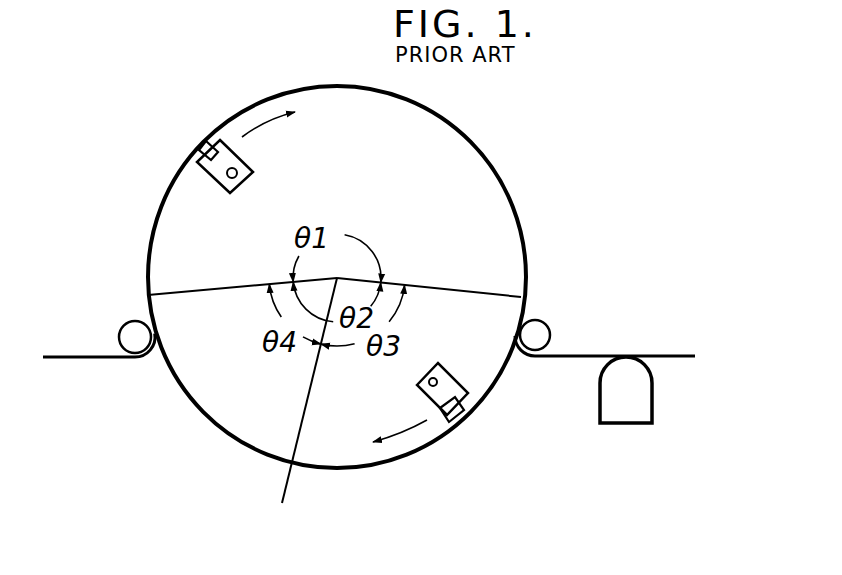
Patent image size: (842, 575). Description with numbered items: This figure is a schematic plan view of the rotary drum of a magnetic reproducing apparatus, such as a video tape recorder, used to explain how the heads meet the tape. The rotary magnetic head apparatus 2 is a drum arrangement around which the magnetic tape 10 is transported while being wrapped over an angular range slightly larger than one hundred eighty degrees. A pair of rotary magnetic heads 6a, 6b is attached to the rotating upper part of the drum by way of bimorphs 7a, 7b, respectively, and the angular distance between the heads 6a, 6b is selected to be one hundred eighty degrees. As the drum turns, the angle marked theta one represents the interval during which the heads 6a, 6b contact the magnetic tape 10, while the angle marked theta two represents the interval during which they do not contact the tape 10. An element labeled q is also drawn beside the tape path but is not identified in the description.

The rotary magnetic head apparatus 2 is at (559, 169).
The magnetic tape 10 is at (597, 355).
The rotary magnetic head 6a is at (212, 141).
The bimorph 7a is at (205, 172).
The rotary magnetic head 6b is at (463, 408).
The bimorph 7b is at (445, 428).
The sensor q is at (600, 395).